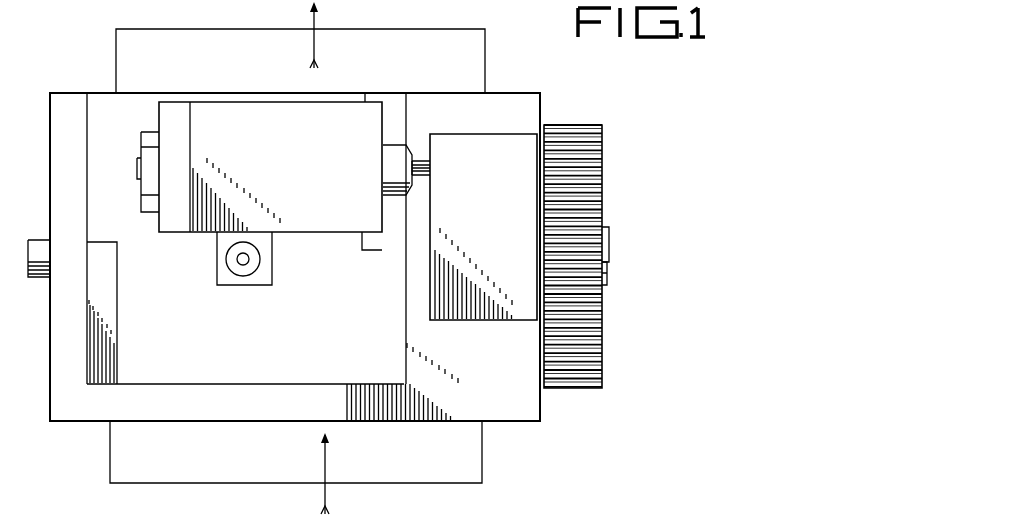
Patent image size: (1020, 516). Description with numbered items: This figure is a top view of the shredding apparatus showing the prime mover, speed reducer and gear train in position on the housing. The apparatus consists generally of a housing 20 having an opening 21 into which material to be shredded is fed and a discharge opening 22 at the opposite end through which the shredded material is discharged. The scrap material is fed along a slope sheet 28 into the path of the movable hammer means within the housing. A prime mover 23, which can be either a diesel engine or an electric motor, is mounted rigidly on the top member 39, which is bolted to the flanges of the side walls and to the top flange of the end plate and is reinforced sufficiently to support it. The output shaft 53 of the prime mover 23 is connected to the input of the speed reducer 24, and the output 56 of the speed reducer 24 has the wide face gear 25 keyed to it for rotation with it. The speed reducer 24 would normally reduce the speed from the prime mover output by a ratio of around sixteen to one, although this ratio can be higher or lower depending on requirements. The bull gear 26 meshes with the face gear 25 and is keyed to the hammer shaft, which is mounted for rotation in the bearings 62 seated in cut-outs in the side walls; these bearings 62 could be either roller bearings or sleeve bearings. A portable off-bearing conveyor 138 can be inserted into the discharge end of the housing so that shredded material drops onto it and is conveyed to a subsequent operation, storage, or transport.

The housing 20 is at (90, 402).
The opening 21 is at (100, 425).
The discharge opening 22 is at (104, 92).
The prime mover 23 is at (304, 231).
The speed reducer 24 is at (497, 236).
The wide face gear 25 is at (589, 217).
The bull gear 26 is at (600, 360).
The slope sheet 28 is at (127, 464).
The top member 39 is at (517, 410).
The output shaft 53 is at (421, 160).
The output 56 is at (612, 257).
The bearings 62 is at (607, 282).
The portable off-bearing conveyor 138 is at (465, 68).